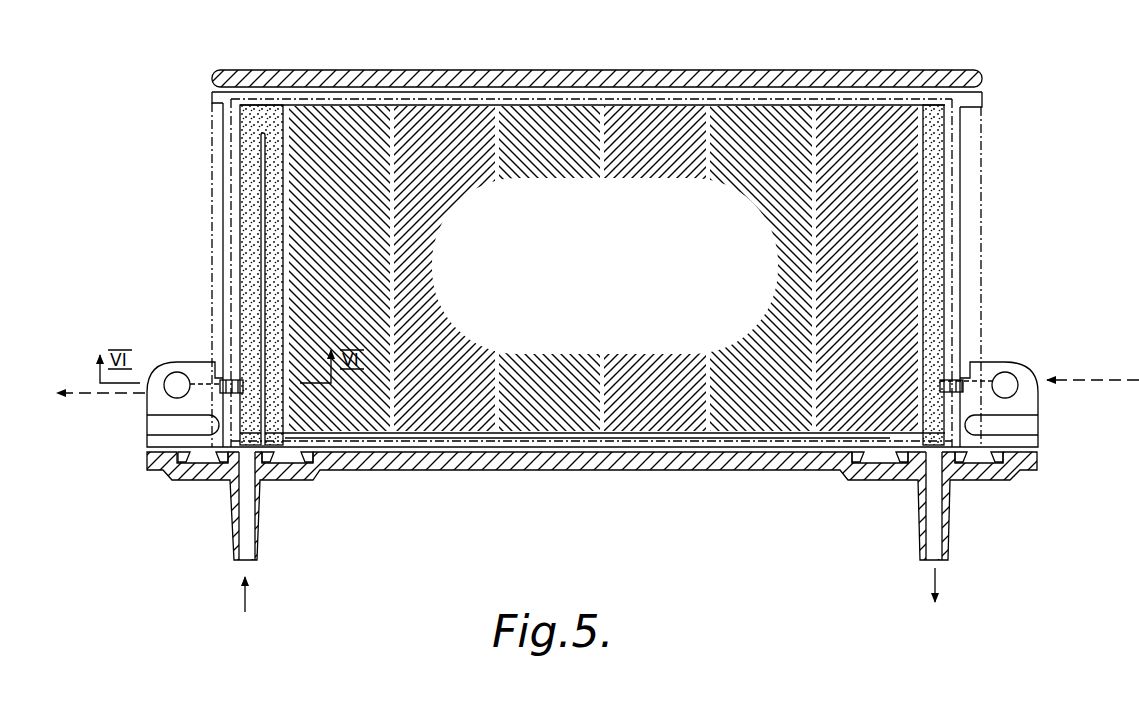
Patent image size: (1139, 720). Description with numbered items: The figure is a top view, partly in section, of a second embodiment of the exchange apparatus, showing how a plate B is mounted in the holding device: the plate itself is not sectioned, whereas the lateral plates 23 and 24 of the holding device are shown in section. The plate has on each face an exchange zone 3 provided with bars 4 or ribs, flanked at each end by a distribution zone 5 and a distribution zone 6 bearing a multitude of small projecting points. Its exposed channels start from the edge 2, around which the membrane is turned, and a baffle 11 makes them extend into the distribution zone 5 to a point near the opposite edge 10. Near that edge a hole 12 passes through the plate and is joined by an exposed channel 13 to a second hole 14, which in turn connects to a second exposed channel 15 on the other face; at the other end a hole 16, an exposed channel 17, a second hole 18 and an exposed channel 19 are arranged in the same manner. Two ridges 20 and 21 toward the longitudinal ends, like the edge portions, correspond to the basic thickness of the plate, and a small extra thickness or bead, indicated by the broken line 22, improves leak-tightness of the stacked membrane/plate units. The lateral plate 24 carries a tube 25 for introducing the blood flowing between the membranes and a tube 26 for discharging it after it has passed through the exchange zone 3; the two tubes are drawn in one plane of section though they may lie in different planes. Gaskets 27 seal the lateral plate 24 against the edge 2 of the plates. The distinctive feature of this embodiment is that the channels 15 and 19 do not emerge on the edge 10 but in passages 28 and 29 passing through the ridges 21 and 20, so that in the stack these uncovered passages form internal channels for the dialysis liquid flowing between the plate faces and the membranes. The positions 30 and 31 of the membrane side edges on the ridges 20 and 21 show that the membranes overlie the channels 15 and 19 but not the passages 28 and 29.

The edge 2 is at (363, 446).
The exchange zone 3 is at (557, 128).
The bars 4 is at (400, 120).
The distribution zone 5 is at (276, 130).
The distribution zone 6 is at (935, 150).
The edge 10 is at (480, 98).
The baffle 11 is at (263, 133).
The hole 12 is at (240, 380).
The exposed channel 13 is at (231, 380).
The second hole 14 is at (222, 376).
The second exposed channel 15 is at (207, 383).
The hole 16 is at (945, 380).
The exposed channel 17 is at (950, 380).
The second hole 18 is at (960, 380).
The exposed channel 19 is at (990, 372).
The ridge 20 is at (958, 212).
The ridge 21 is at (230, 146).
The bead line 22 is at (427, 442).
The lateral plate 23 is at (630, 84).
The lateral plate 24 is at (497, 470).
The tube 25 is at (247, 527).
The tube 26 is at (938, 546).
The gaskets 27 is at (265, 462).
The passage 28 is at (175, 390).
The passage 29 is at (1010, 390).
The membrane side edge position 30 is at (212, 112).
The membrane side edge position 31 is at (982, 172).